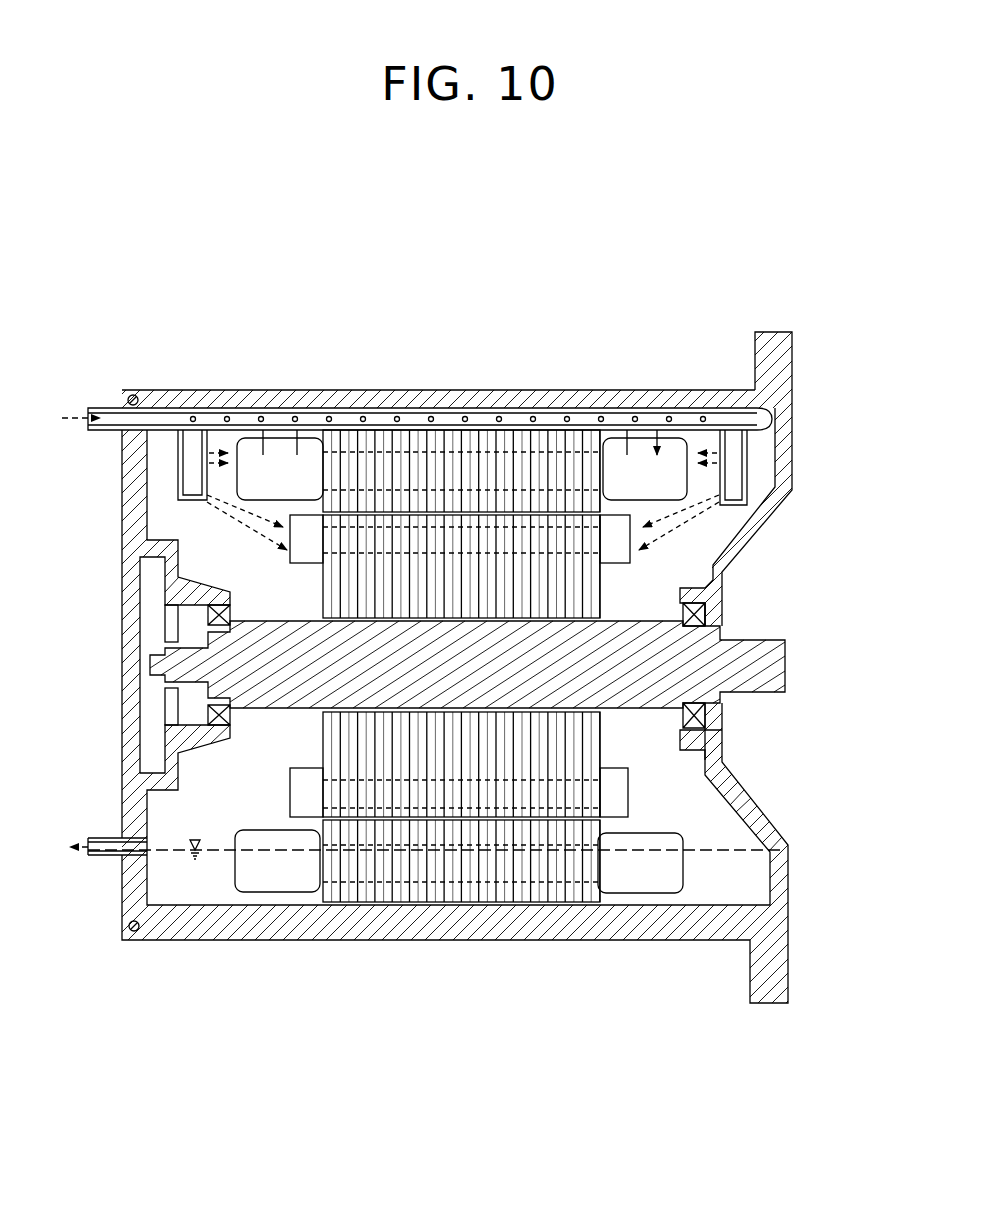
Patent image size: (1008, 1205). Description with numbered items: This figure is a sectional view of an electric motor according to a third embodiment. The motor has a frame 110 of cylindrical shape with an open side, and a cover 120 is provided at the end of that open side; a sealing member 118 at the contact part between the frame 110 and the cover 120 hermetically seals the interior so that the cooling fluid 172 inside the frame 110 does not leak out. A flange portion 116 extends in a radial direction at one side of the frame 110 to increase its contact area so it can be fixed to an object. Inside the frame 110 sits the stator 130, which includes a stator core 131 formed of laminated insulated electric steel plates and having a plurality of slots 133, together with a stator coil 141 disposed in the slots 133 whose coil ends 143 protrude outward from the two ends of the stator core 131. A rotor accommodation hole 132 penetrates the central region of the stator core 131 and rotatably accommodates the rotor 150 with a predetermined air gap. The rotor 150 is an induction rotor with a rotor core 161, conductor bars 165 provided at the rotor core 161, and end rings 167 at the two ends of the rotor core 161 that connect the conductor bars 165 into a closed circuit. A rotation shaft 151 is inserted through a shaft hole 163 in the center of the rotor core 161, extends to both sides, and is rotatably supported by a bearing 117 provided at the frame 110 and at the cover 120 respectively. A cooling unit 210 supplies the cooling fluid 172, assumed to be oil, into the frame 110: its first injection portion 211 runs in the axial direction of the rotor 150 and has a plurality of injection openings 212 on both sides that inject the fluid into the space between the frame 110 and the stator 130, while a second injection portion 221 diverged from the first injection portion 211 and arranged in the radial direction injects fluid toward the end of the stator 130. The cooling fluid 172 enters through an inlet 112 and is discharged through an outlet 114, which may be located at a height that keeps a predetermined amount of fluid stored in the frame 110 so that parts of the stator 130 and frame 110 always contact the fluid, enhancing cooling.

The frame 110 is at (440, 644).
The inlet 112 is at (125, 424).
The outlet 114 is at (118, 842).
The flange portion 116 is at (755, 352).
The bearing 117 is at (208, 712).
The sealing member 118 is at (134, 932).
The cover 120 is at (125, 512).
The stator 130 is at (461, 674).
The stator core 131 is at (509, 894).
The rotor accommodation hole 132 is at (572, 798).
The slots 133 is at (476, 880).
The stator coil 141 is at (636, 884).
The coil ends 143 is at (281, 440).
The rotor 150 is at (497, 790).
The rotation shaft 151 is at (770, 668).
The rotor core 161 is at (378, 764).
The shaft hole 163 is at (572, 694).
The conductor bars 165 is at (424, 800).
The end rings 167 is at (306, 805).
The cooling fluid 172 is at (735, 882).
The cooling unit 210 is at (430, 348).
The first injection portion 211 is at (320, 410).
The injection openings 212 is at (400, 415).
The second injection portion 221 is at (180, 455).